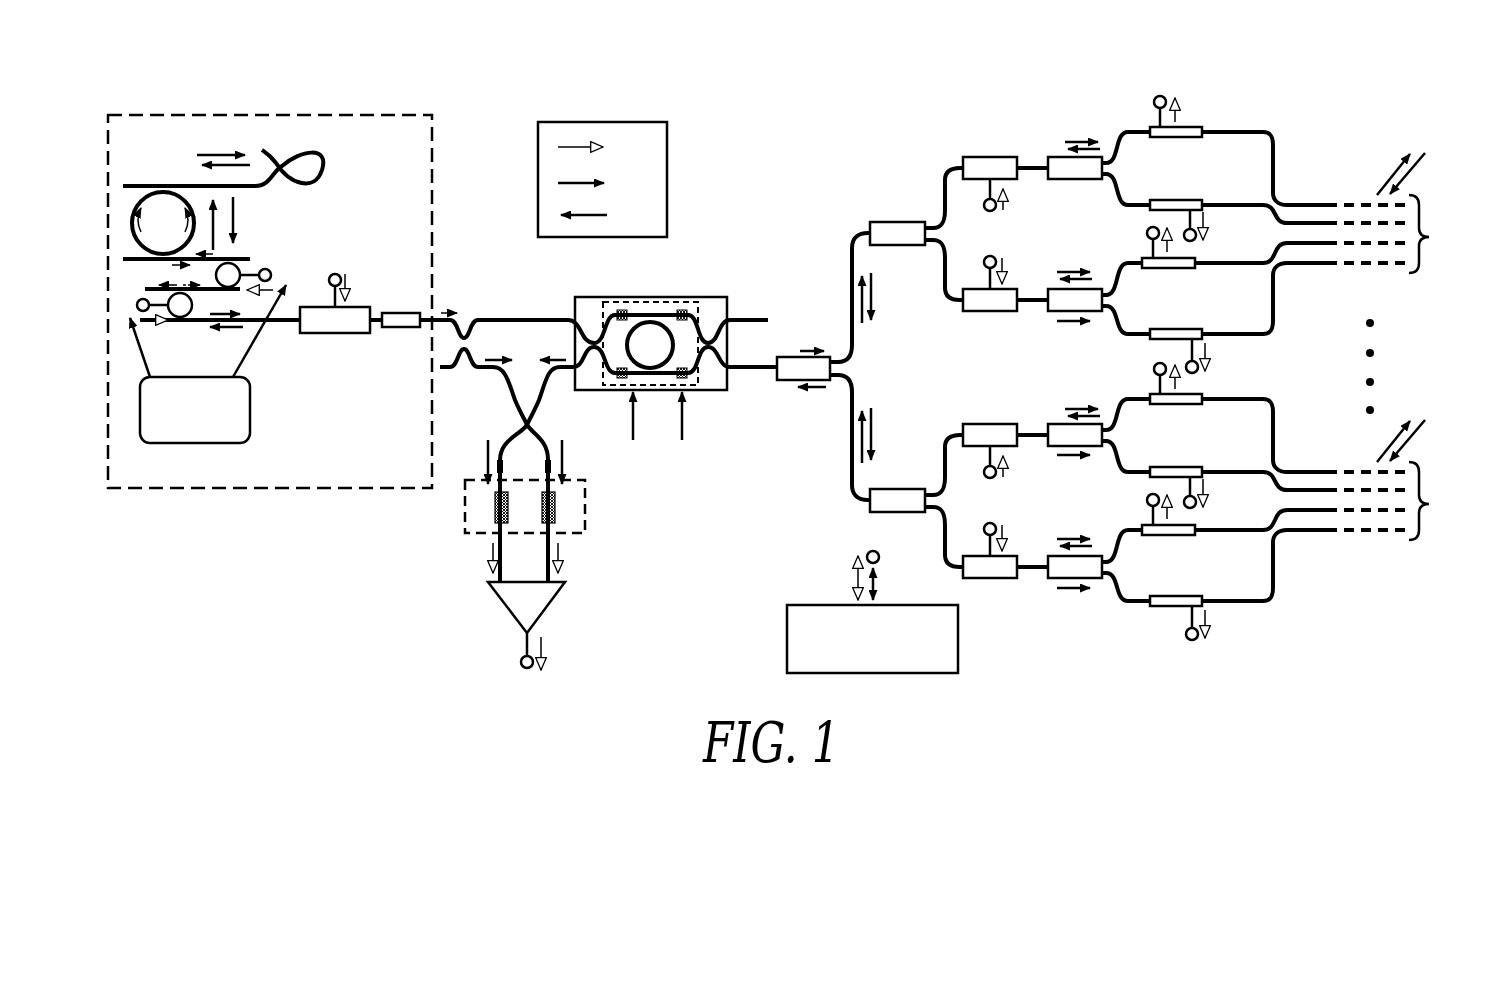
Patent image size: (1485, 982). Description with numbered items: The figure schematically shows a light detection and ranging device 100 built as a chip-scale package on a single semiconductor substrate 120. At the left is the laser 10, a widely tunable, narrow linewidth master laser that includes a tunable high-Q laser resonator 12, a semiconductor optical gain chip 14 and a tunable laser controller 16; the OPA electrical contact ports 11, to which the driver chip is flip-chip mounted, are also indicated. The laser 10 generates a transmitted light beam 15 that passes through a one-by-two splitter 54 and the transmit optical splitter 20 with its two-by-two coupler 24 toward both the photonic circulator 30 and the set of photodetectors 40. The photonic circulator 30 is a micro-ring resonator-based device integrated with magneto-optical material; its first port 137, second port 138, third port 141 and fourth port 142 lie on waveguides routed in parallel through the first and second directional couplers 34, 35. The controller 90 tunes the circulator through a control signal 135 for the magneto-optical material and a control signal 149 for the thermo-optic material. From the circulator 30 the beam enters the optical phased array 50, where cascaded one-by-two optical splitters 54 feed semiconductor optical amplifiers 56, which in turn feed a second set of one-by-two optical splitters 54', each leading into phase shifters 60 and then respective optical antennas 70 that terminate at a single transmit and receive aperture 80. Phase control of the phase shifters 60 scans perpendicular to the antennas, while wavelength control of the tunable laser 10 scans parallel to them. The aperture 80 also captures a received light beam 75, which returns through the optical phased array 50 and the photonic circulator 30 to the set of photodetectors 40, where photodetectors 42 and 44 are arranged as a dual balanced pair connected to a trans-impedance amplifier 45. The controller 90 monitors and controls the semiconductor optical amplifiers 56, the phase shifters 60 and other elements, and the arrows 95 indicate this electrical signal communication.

The LiDAR device 100 is at (744, 102).
The laser 10 is at (270, 301).
The OPA electrical contact ports 11 is at (372, 114).
The tunable high-Q laser resonator 12 is at (226, 227).
The semiconductor optical gain chip 14 is at (338, 334).
The tunable laser controller 16 is at (208, 364).
The transmit optical splitter 20 is at (525, 471).
The 2×2 coupler 24 is at (513, 426).
The photonic circulator 30 is at (690, 297).
The first directional coupler 34 is at (592, 344).
The second directional coupler 35 is at (768, 323).
The set of photodetectors 40 is at (587, 503).
The photodetector 42 is at (494, 510).
The photodetector 44 is at (556, 512).
The trans-impedance amplifier 45 is at (501, 606).
The optical phased array 50 is at (1084, 118).
The 1×2 optical splitter 54 is at (684, 336).
The second set of 1×2 optical splitters 54' is at (1083, 340).
The semiconductor optical amplifier 56 is at (975, 157).
The phase shifter 60 is at (1187, 127).
The optical antenna 70 is at (1363, 196).
The aperture 80 is at (1394, 367).
The controller 90 is at (872, 612).
The arrows 95 is at (602, 179).
The transmitted light beam 15 is at (600, 185).
The received light beam 75 is at (602, 213).
The semiconductor substrate 120 is at (955, 390).
The control signal 135 is at (628, 433).
The first port 137 is at (620, 380).
The second port 138 is at (687, 380).
The third port 141 is at (692, 310).
The fourth port 142 is at (610, 310).
The control signal 149 is at (684, 433).